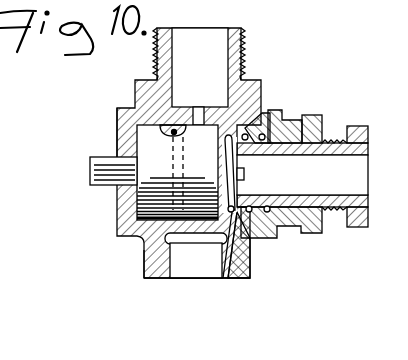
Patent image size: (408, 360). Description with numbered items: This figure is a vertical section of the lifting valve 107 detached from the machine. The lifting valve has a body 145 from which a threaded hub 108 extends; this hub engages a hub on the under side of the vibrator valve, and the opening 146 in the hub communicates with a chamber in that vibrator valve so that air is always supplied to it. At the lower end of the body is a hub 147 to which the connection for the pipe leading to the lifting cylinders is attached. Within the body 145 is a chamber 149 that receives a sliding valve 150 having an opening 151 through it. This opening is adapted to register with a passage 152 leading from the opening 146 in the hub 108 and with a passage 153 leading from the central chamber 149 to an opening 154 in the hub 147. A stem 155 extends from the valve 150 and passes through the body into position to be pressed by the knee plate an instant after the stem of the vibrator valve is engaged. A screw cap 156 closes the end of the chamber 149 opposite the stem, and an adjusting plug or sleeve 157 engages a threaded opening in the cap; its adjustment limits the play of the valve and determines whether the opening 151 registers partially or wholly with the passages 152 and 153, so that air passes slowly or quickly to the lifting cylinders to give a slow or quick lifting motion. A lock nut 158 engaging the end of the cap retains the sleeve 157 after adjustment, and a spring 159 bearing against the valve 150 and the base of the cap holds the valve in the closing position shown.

The lifting valve 107 is at (186, 153).
The threaded hub 108 is at (243, 52).
The body of the lifting valve 145 is at (116, 134).
The opening 146 is at (200, 67).
The hub 147 is at (153, 268).
The chamber 149 is at (250, 252).
The valve 150 is at (177, 172).
The opening 151 is at (160, 131).
The passage 152 is at (207, 99).
The passage 153 is at (193, 234).
The opening 154 is at (188, 268).
The stem 155 is at (100, 172).
The screw cap 156 is at (284, 125).
The adjusting plug or sleeve 157 is at (361, 229).
The lock nut 158 is at (316, 234).
The spring 159 is at (237, 280).